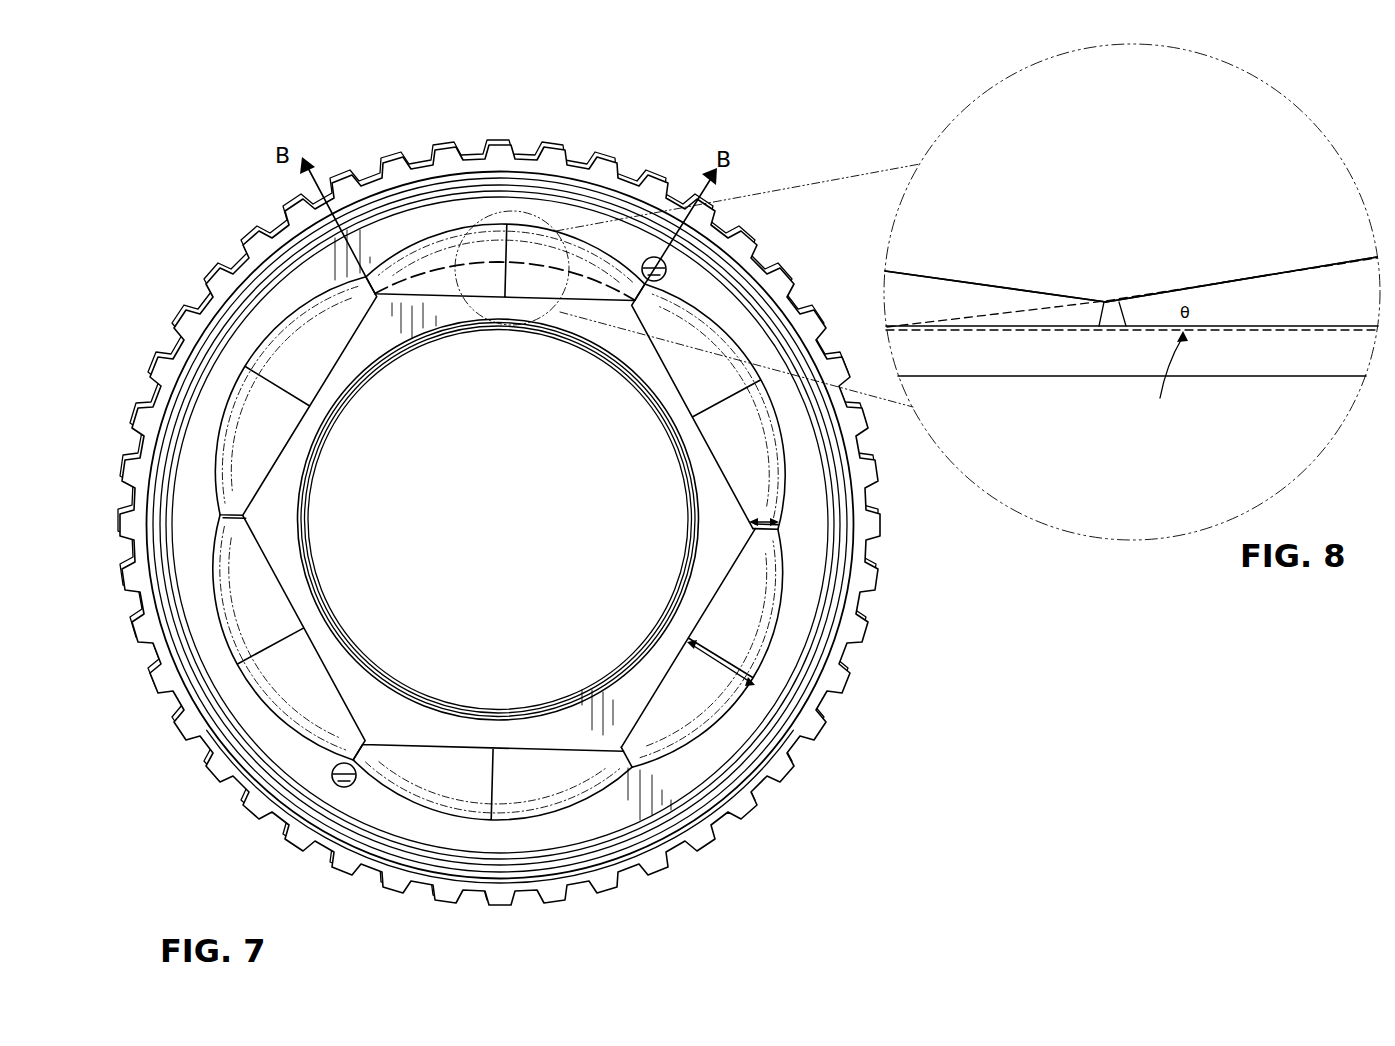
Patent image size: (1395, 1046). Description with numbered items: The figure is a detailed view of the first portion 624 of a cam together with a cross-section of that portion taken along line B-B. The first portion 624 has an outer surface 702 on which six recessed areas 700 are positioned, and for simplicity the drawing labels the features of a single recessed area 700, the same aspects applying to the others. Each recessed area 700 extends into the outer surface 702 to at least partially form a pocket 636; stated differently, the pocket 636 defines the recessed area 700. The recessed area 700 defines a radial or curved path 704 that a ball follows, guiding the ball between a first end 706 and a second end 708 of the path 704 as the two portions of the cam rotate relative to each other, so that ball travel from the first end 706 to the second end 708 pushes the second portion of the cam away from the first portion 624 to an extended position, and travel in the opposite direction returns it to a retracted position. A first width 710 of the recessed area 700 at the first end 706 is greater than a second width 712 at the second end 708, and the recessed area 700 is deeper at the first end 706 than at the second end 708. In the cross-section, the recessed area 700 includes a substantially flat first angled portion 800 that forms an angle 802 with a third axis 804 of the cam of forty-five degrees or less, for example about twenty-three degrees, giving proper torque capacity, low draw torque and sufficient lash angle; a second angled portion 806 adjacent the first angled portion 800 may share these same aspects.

In FIG. 7, the first portion 624 is at (215, 272).
In FIG. 8, the first portion 624 is at (1006, 379).
In FIG. 7, the recessed area 700 is at (573, 522).
In FIG. 8, the recessed area 700 is at (1131, 261).
In FIG. 7, the outer surface 702 is at (732, 414).
In FIG. 7, the path 704 is at (733, 648).
In FIG. 7, the first end 706 is at (690, 646).
In FIG. 7, the second end 708 is at (760, 538).
In FIG. 7, the first width 710 is at (750, 688).
In FIG. 7, the second width 712 is at (777, 519).
In FIG. 7, the pocket 636 is at (634, 742).
In FIG. 8, the first angled portion 800 is at (1286, 279).
In FIG. 8, the angle 802 is at (1183, 286).
In FIG. 8, the third axis 804 is at (1286, 333).
In FIG. 8, the second angled portion 806 is at (941, 279).